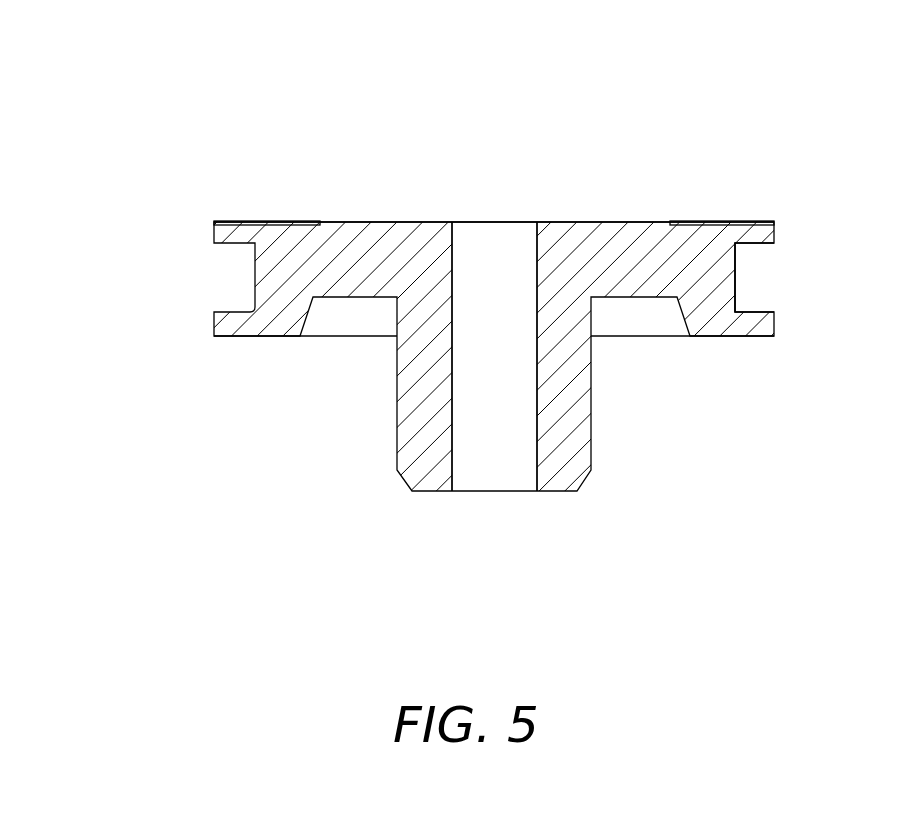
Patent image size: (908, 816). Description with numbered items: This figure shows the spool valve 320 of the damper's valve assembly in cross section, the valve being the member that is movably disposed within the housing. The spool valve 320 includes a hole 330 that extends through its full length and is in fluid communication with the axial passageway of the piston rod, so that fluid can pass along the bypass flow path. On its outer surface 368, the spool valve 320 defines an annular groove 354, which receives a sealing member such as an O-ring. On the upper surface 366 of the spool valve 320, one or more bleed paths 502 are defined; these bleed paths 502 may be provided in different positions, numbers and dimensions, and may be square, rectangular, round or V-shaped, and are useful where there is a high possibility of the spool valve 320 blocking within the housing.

The spool valve 320 is at (121, 107).
The bleed paths 502 is at (266, 221).
The hole 330 is at (490, 308).
The upper surface 366 is at (612, 221).
The outer surface 368 is at (736, 262).
The annular groove 354 is at (740, 289).